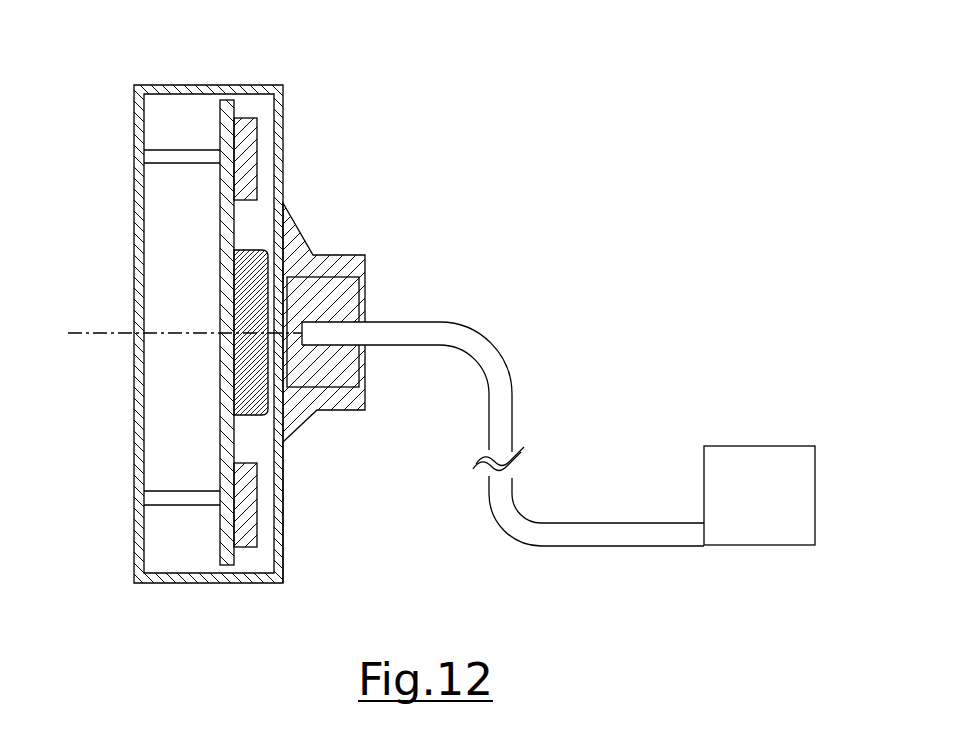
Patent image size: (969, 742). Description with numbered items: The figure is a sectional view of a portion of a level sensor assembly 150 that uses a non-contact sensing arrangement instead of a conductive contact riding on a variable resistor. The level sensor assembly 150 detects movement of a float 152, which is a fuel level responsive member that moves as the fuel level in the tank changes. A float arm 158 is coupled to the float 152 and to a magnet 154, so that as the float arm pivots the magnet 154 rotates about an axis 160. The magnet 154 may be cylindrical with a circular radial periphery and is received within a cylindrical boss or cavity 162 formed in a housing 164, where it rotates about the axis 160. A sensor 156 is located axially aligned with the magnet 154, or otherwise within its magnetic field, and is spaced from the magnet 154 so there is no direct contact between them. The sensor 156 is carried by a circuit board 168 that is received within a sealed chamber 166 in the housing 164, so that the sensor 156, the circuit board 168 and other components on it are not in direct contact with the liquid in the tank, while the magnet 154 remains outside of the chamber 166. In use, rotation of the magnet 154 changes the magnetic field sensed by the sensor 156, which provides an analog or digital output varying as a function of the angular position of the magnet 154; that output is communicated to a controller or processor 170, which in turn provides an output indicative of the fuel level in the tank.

The level sensor assembly 150 is at (444, 84).
The float 152 is at (778, 500).
The magnet 154 is at (348, 307).
The sensor 156 is at (250, 385).
The float arm 158 is at (514, 413).
The axis 160 is at (98, 335).
The cavity 162 is at (333, 286).
The housing 164 is at (213, 86).
The sealed chamber 166 is at (283, 443).
The circuit board 168 is at (225, 226).
The controller 170 is at (254, 153).